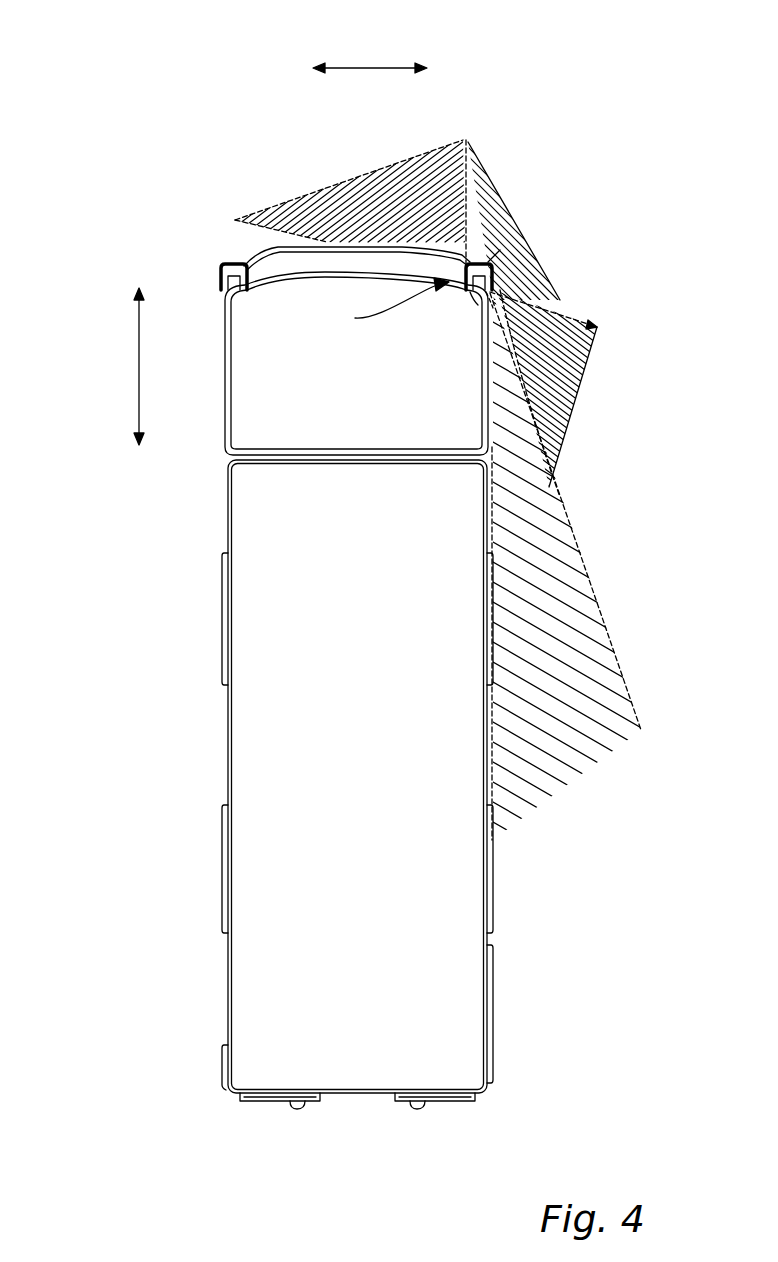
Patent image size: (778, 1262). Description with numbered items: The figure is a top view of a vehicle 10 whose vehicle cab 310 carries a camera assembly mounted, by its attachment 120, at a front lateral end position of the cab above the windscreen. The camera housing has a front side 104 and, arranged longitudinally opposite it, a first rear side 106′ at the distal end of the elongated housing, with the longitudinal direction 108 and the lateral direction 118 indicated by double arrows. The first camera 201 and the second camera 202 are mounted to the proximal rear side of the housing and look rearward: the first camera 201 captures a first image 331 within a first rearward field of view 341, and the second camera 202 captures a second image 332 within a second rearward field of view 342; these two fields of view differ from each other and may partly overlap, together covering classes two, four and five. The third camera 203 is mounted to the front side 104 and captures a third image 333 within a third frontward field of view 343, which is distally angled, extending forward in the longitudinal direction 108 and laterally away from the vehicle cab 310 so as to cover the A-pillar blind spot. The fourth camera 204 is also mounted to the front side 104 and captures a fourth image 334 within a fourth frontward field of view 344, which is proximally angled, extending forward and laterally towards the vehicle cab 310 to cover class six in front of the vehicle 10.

The vehicle 10 is at (128, 537).
The vehicle cab 310 is at (240, 418).
The front side 104 is at (483, 262).
The first rear side 106′ is at (458, 288).
The longitudinal direction 108 is at (139, 350).
The lateral direction 118 is at (367, 68).
The attachment 120 is at (380, 304).
The first camera 201 is at (472, 295).
The second camera 202 is at (493, 310).
The third camera 203 is at (500, 250).
The fourth camera 204 is at (469, 165).
The first image 331 is at (583, 738).
The second image 332 is at (555, 392).
The third image 333 is at (500, 252).
The fourth image 334 is at (382, 185).
The first rearward field of view 341 is at (600, 697).
The second rearward field of view 342 is at (578, 358).
The third frontward field of view 343 is at (503, 307).
The fourth frontward field of view 344 is at (317, 207).